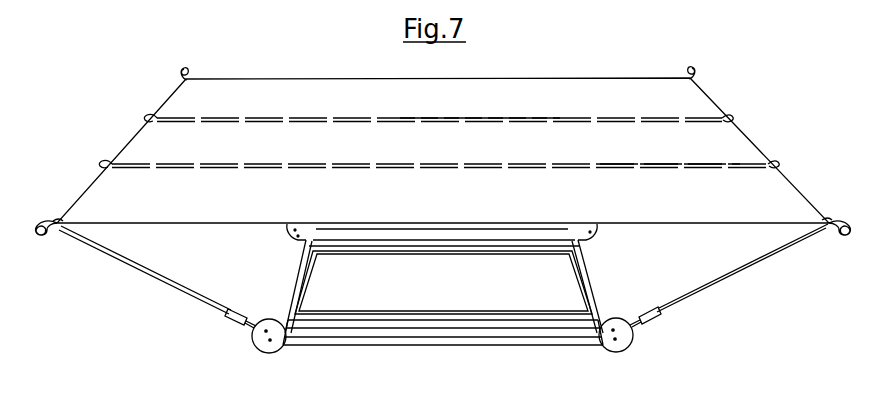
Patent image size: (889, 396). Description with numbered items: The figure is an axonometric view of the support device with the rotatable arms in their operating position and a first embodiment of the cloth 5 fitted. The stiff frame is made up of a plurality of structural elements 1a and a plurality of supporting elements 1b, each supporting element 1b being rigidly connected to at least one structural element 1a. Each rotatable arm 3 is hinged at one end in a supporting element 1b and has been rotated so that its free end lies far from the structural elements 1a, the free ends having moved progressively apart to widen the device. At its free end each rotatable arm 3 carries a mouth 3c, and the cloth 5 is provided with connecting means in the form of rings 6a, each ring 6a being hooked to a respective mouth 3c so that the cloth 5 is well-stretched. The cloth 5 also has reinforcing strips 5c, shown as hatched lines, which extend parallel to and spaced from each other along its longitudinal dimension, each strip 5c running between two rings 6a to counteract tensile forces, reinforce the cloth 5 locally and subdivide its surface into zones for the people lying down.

The structural element 1a is at (296, 283).
The supporting element 1b is at (252, 337).
The rotatable arm 3 is at (158, 285).
The mouth 3c is at (179, 75).
The cloth 5 is at (445, 158).
The reinforcing strip 5c is at (558, 117).
The ring 6a is at (102, 160).